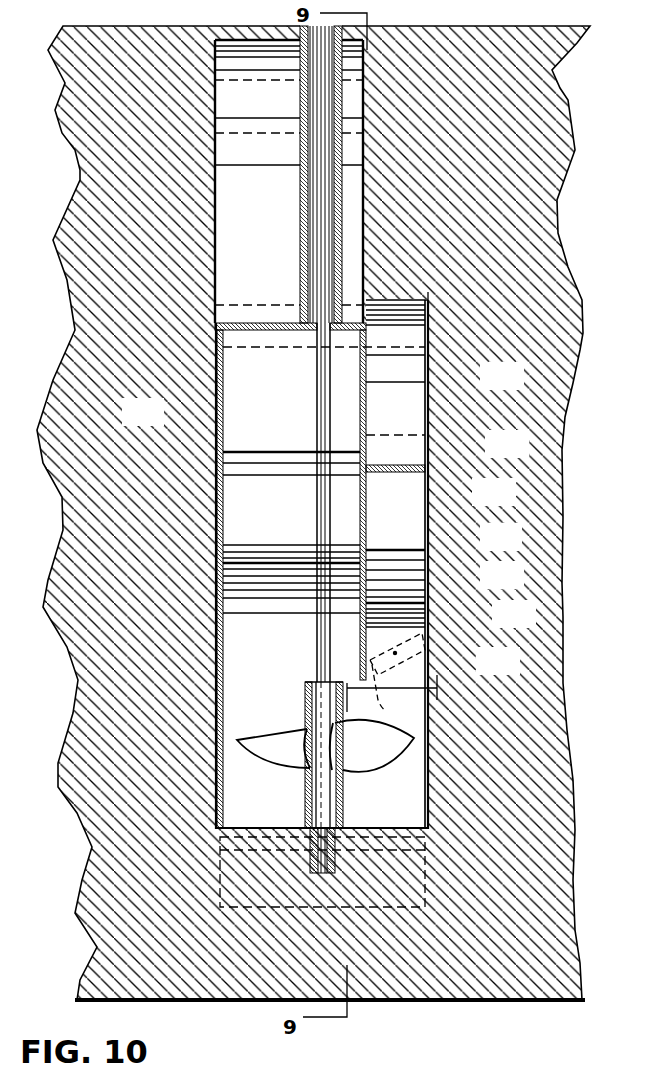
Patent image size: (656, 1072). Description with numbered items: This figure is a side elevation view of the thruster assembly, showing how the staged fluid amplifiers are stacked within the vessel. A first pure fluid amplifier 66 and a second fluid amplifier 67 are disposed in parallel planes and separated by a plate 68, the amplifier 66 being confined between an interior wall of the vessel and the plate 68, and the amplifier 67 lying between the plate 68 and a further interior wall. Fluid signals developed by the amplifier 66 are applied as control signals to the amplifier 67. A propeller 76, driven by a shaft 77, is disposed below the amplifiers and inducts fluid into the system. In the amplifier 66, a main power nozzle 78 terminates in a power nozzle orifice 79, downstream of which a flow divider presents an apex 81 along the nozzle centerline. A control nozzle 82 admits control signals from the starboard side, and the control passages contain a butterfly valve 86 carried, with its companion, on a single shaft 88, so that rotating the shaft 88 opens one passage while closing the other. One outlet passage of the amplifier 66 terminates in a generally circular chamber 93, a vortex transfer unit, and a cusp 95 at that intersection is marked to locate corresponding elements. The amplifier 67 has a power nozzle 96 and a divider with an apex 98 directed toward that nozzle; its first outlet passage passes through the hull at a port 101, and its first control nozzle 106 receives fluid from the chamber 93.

The first pure fluid amplifier 66 is at (415, 499).
The second fluid amplifier 67 is at (245, 395).
The plate 68 is at (372, 524).
The propeller 76 is at (268, 743).
The shaft 77 is at (320, 377).
The main power nozzle 78 is at (412, 618).
The power nozzle orifice 79 is at (410, 603).
The apex 81 is at (412, 555).
The control nozzle 82 is at (408, 597).
The butterfly valve 86 is at (394, 693).
The shaft 88 is at (395, 653).
The circular chamber 93 is at (397, 413).
The cusp 95 is at (400, 435).
The power nozzle 96 is at (270, 567).
The apex 98 is at (248, 323).
The port 101 is at (254, 103).
The first control nozzle 106 is at (261, 460).